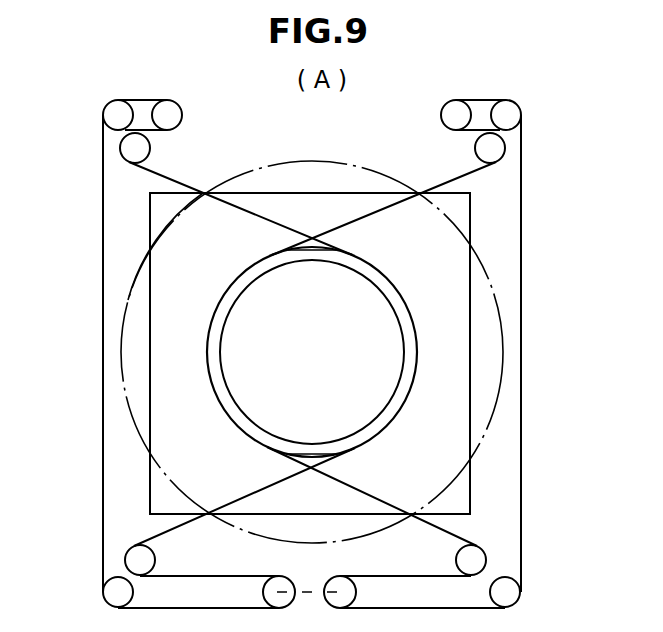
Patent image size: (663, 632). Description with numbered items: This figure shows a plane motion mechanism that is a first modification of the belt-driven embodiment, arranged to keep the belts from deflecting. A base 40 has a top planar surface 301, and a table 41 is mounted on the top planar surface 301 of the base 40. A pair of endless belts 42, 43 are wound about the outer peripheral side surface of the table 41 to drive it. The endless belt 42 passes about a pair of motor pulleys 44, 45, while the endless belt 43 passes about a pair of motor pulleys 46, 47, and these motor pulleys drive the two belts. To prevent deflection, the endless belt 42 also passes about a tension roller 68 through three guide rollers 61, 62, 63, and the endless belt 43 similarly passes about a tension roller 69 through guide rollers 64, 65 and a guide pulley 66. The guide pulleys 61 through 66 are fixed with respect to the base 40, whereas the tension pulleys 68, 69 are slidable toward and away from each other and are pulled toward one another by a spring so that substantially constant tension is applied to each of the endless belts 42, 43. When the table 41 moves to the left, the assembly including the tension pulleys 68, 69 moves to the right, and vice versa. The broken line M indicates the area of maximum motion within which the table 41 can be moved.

The base 40 is at (182, 278).
The table 41 is at (243, 355).
The endless belt 42 is at (181, 186).
The endless belt 43 is at (449, 185).
The motor pulley 44 is at (127, 150).
The motor pulley 45 is at (127, 553).
The motor pulley 46 is at (506, 156).
The motor pulley 47 is at (523, 477).
The guide roller 61 is at (114, 114).
The guide roller 62 is at (177, 110).
The guide roller 63 is at (104, 590).
The guide roller 64 is at (508, 117).
The guide roller 65 is at (447, 114).
The guide pulley 66 is at (522, 589).
The tension roller 68 is at (280, 578).
The tension roller 69 is at (340, 578).
The top planar surface 301 is at (170, 243).
The broken line M is at (497, 305).